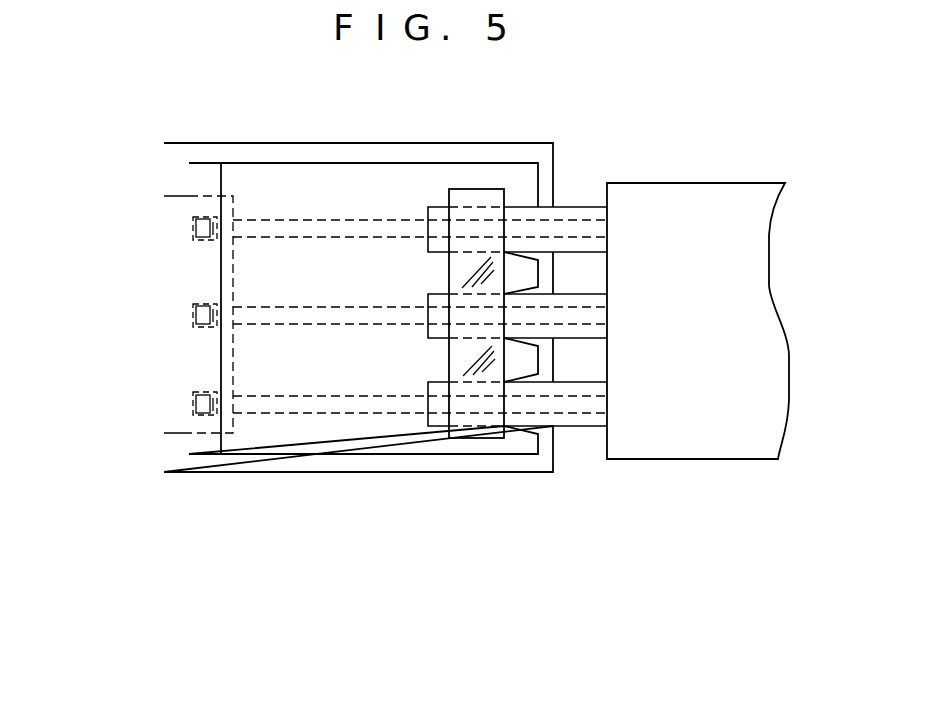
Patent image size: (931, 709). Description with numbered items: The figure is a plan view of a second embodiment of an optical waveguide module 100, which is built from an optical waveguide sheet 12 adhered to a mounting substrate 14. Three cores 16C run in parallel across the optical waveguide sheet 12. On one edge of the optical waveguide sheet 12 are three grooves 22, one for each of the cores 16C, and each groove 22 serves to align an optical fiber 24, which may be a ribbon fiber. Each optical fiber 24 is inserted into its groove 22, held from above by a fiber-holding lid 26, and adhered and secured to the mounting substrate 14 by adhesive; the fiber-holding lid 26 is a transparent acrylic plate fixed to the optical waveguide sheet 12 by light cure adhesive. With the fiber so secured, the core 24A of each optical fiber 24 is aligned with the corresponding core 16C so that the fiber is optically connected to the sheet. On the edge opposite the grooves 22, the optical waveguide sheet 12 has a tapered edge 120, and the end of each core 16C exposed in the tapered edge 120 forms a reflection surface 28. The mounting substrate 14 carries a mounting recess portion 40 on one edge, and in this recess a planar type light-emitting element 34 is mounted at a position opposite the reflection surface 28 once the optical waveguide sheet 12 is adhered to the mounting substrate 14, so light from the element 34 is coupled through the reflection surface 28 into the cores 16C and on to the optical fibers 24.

The optical waveguide module 100 is at (525, 477).
The optical waveguide sheet 12 is at (242, 182).
The mounting substrate 14 is at (283, 150).
The core 16C is at (377, 230).
The groove 22 is at (512, 207).
The optical fiber 24 is at (577, 198).
The core of the optical fiber 24A is at (583, 227).
The fiber-holding lid 26 is at (462, 430).
The reflection surface 28 is at (195, 231).
The planar type light-emitting element 34 is at (195, 223).
The mounting recess portion 40 is at (175, 413).
The tapered edge 120 is at (213, 445).